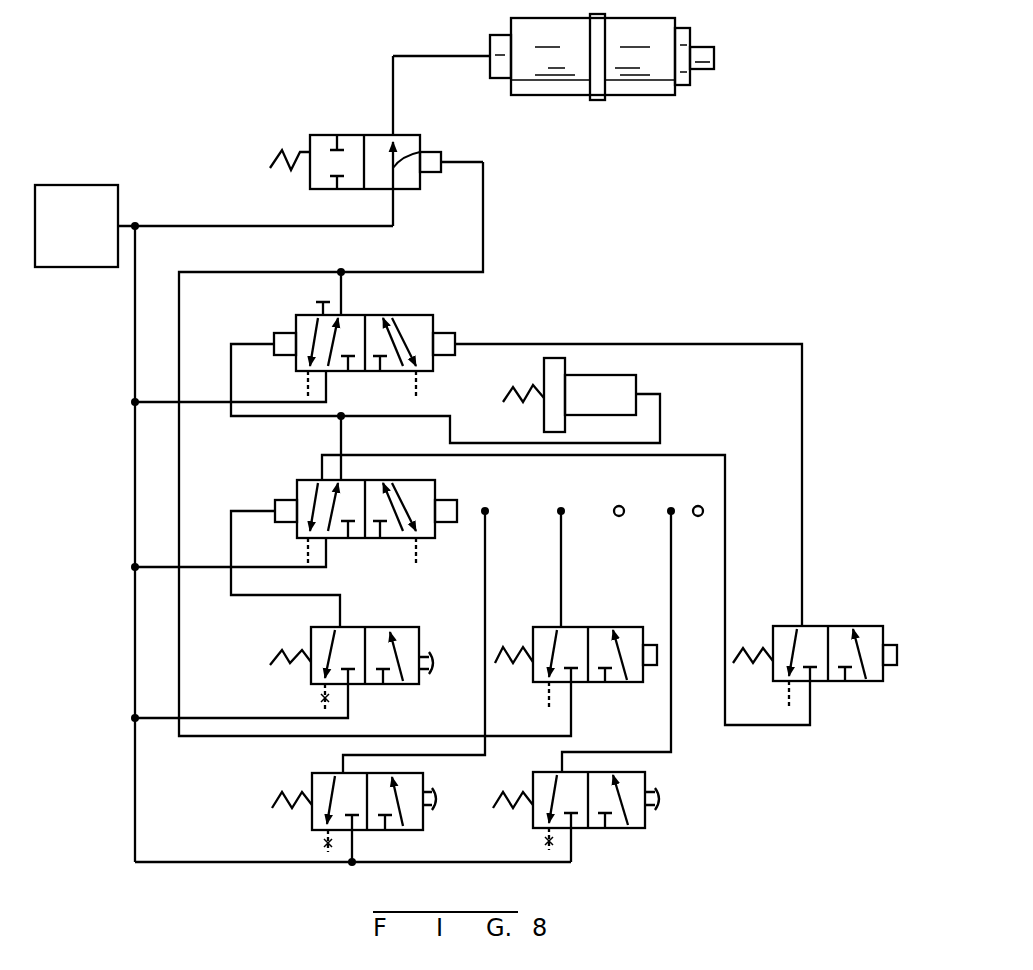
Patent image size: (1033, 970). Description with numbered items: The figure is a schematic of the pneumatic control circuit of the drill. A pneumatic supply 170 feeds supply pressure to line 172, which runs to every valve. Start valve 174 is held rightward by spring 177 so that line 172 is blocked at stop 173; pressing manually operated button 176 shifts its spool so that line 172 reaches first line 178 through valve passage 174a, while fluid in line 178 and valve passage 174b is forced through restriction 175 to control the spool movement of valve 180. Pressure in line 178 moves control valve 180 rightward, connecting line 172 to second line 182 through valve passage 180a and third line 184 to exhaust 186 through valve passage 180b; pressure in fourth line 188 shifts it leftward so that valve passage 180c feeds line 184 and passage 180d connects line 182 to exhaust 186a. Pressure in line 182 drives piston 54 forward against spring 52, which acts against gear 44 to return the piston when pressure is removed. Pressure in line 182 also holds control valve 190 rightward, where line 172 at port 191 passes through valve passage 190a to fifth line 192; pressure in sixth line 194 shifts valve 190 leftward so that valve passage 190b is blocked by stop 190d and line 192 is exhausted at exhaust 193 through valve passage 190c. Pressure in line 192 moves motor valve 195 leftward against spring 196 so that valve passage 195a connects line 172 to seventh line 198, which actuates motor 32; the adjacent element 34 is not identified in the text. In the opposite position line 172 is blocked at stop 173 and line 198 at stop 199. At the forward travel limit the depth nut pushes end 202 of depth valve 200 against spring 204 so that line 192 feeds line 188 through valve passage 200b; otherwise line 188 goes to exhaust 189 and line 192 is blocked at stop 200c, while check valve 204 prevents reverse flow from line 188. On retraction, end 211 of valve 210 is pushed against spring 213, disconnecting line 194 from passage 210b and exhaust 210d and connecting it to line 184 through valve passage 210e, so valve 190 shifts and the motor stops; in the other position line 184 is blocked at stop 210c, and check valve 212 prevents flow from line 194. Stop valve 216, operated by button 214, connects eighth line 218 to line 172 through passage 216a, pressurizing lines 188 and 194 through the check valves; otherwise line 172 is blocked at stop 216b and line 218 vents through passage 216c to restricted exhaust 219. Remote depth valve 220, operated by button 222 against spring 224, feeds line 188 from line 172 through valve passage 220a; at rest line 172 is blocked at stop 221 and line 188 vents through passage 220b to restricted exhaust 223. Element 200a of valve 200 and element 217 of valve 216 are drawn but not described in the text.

The motor 32 is at (640, 82).
The piston rod 34 is at (702, 69).
The gear 44 is at (560, 358).
The spring 52 is at (533, 385).
The piston 54 is at (622, 375).
The pneumatic supply 170 is at (118, 190).
The supply line 172 is at (393, 213).
The stop 173 is at (330, 178).
The start valve 174 is at (403, 684).
The valve passage 174a is at (392, 632).
The valve passage 174b is at (332, 650).
The restriction 175 is at (318, 698).
The button 176 is at (428, 656).
The spring 177 is at (282, 650).
The first line 178 is at (231, 511).
The control valve 180 is at (410, 540).
The valve passage 180a is at (337, 508).
The valve passage 180b is at (318, 500).
The valve passage 180c is at (402, 505).
The valve passage 180d is at (418, 510).
The second line 182 is at (231, 348).
The third line 184 is at (462, 462).
The exhaust 186 is at (306, 545).
The exhaust 186a is at (420, 553).
The fourth line 188 is at (535, 508).
The exhaust 189 is at (546, 700).
The control valve 190 is at (416, 316).
The valve passage 190a is at (330, 340).
The valve passage 190b is at (403, 371).
The valve passage 190c is at (407, 334).
The stop 190d is at (316, 303).
The port 191 is at (330, 371).
The fifth line 192 is at (483, 190).
The exhaust 193 is at (420, 388).
The sixth line 194 is at (640, 344).
The motor valve 195 is at (396, 135).
The valve passage 195a is at (432, 152).
The spring 196 is at (282, 150).
The seventh line 198 is at (432, 56).
The stop 199 is at (337, 148).
The depth valve 200 is at (583, 630).
The valve passage 200a is at (620, 645).
The valve passage 200b is at (552, 650).
The stop 200c is at (578, 680).
The end 202 is at (650, 645).
The spring 204 is at (619, 506).
The valve 210 is at (825, 626).
The passage 210b is at (793, 650).
The stop 210c is at (814, 683).
The exhaust 210d is at (785, 703).
The valve passage 210e is at (865, 660).
The end 211 is at (890, 665).
The check valve 212 is at (698, 506).
The spring 213 is at (763, 648).
The button 214 is at (656, 800).
The stop valve 216 is at (625, 828).
The passage 216a is at (630, 818).
The stop 216b is at (573, 835).
The passage 216c is at (553, 795).
The spring 217 is at (523, 792).
The eighth line 218 is at (671, 740).
The restricted exhaust 219 is at (542, 845).
The remote depth valve 220 is at (405, 830).
The valve passage 220a is at (403, 815).
The passage 220b is at (333, 795).
The stop 221 is at (354, 835).
The button 222 is at (433, 800).
The restricted exhaust 223 is at (320, 845).
The spring 224 is at (282, 792).